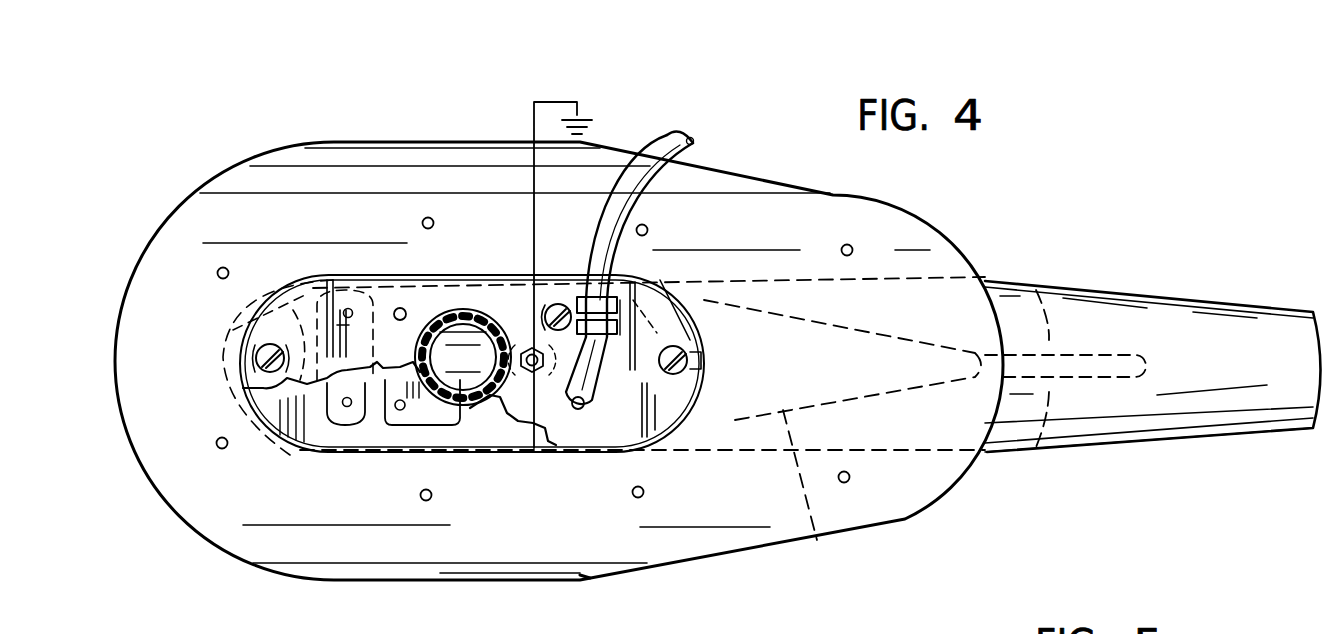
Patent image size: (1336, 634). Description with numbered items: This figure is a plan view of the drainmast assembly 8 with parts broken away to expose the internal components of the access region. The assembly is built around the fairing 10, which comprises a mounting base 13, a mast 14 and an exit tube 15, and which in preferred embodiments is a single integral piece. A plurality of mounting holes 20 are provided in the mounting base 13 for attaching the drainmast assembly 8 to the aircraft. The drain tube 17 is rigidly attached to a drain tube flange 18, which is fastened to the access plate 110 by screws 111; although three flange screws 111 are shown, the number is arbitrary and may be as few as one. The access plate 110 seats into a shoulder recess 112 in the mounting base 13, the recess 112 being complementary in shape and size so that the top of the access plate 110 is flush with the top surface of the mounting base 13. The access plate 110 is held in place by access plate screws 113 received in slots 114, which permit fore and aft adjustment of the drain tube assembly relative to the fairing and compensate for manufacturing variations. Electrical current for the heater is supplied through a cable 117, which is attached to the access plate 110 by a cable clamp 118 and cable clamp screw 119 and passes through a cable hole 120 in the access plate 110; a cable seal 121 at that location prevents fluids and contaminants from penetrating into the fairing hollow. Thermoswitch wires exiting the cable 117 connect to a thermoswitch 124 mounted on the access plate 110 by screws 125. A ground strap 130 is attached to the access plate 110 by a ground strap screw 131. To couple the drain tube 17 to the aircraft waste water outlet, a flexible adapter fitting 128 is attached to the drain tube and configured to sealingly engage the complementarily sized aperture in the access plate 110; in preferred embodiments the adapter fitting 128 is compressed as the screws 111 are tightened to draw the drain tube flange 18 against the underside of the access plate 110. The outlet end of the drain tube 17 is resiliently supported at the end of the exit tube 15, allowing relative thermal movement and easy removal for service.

The drainmast assembly 8 is at (1018, 218).
The fairing 10 is at (1006, 451).
The mounting base 13 is at (243, 178).
The mast 14 is at (822, 540).
The exit tube 15 is at (1168, 302).
The drain tube 17 is at (470, 410).
The drain tube flange 18 is at (420, 420).
The mounting holes 20 is at (217, 449).
The access plate 110 is at (311, 286).
The flange screws 111 is at (398, 410).
The shoulder recess 112 is at (313, 430).
The access plate screws 113 is at (375, 367).
The slots 114 is at (252, 358).
The cable 117 is at (670, 140).
The cable clamp 118 is at (617, 294).
The cable clamp screw 119 is at (556, 303).
The cable hole 120 is at (582, 410).
The cable seal 121 is at (600, 403).
The thermoswitch 124 is at (325, 385).
The thermoswitch screws 125 is at (346, 407).
The flexible adapter fitting 128 is at (450, 318).
The ground strap 130 is at (534, 100).
The ground strap screw 131 is at (534, 448).